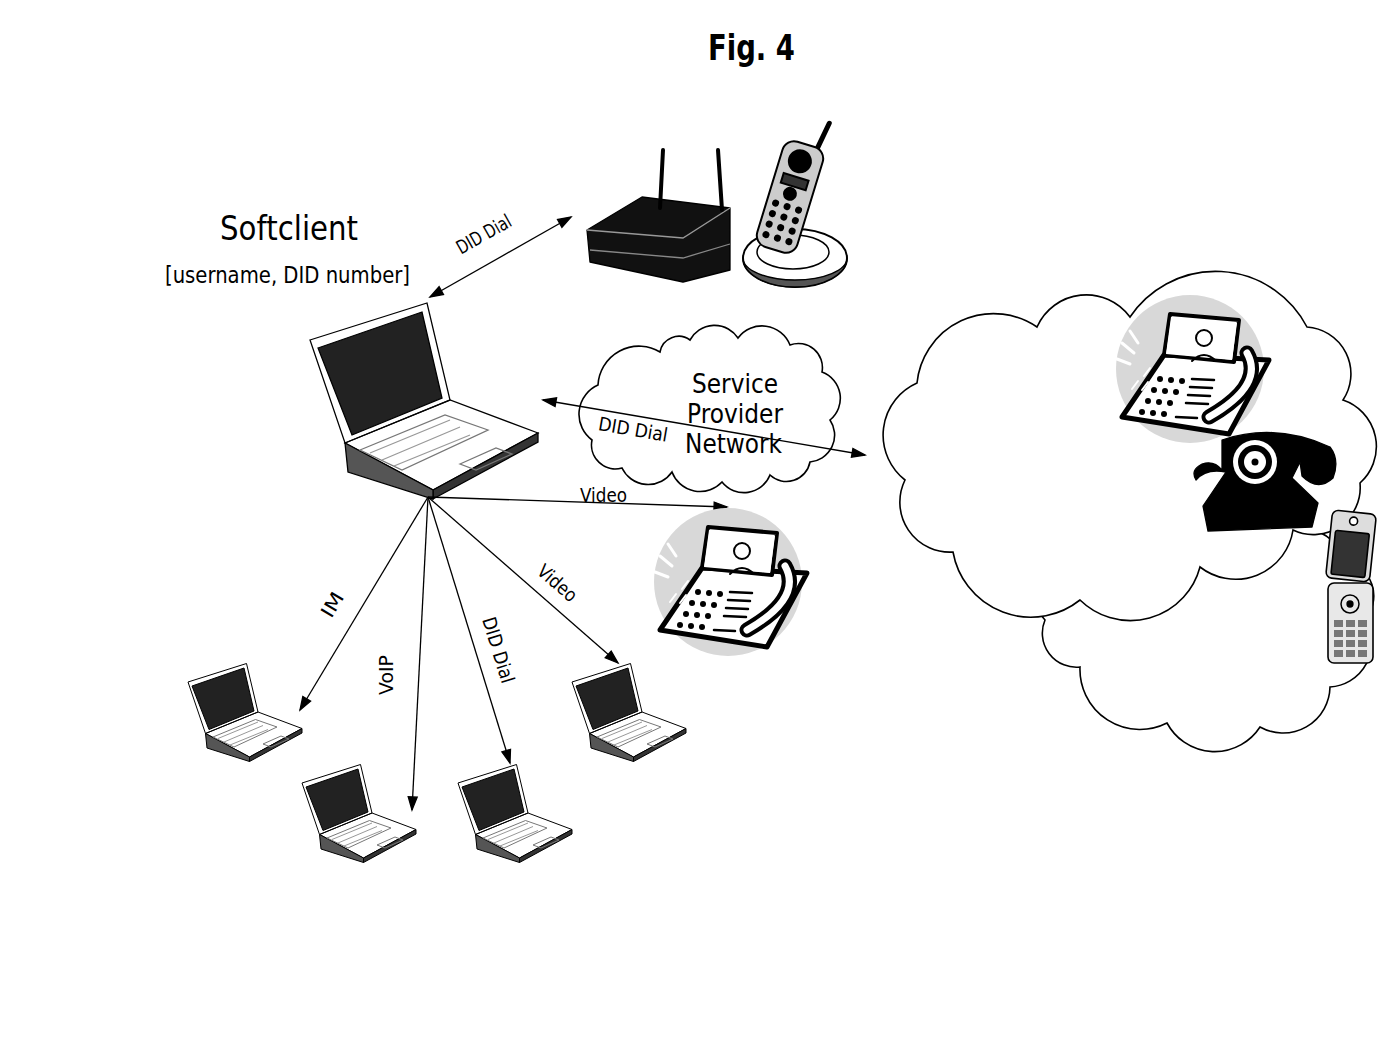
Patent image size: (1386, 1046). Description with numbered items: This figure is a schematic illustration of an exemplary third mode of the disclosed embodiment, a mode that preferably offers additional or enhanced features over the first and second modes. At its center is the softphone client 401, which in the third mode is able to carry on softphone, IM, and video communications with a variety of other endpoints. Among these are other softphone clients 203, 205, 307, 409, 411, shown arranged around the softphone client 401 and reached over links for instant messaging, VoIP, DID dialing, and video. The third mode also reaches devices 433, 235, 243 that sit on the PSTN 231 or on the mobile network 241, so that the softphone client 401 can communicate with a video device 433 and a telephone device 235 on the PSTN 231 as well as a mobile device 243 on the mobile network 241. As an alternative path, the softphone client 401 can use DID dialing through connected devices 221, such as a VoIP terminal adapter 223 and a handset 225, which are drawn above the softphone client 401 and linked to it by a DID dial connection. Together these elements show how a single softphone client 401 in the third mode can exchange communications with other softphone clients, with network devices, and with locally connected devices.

The connected devices 221 is at (778, 214).
The VoIP terminal adapter 223 is at (647, 212).
The handset 225 is at (795, 199).
The softphone client 401 is at (404, 401).
The PSTN 231 is at (1129, 445).
The device 433 is at (1169, 349).
The device 235 is at (1242, 473).
The mobile network 241 is at (1205, 636).
The device 243 is at (1336, 615).
The softphone client 411 is at (775, 608).
The softphone client 203 is at (223, 736).
The softphone client 205 is at (343, 837).
The softphone client 307 is at (559, 837).
The softphone client 409 is at (668, 743).